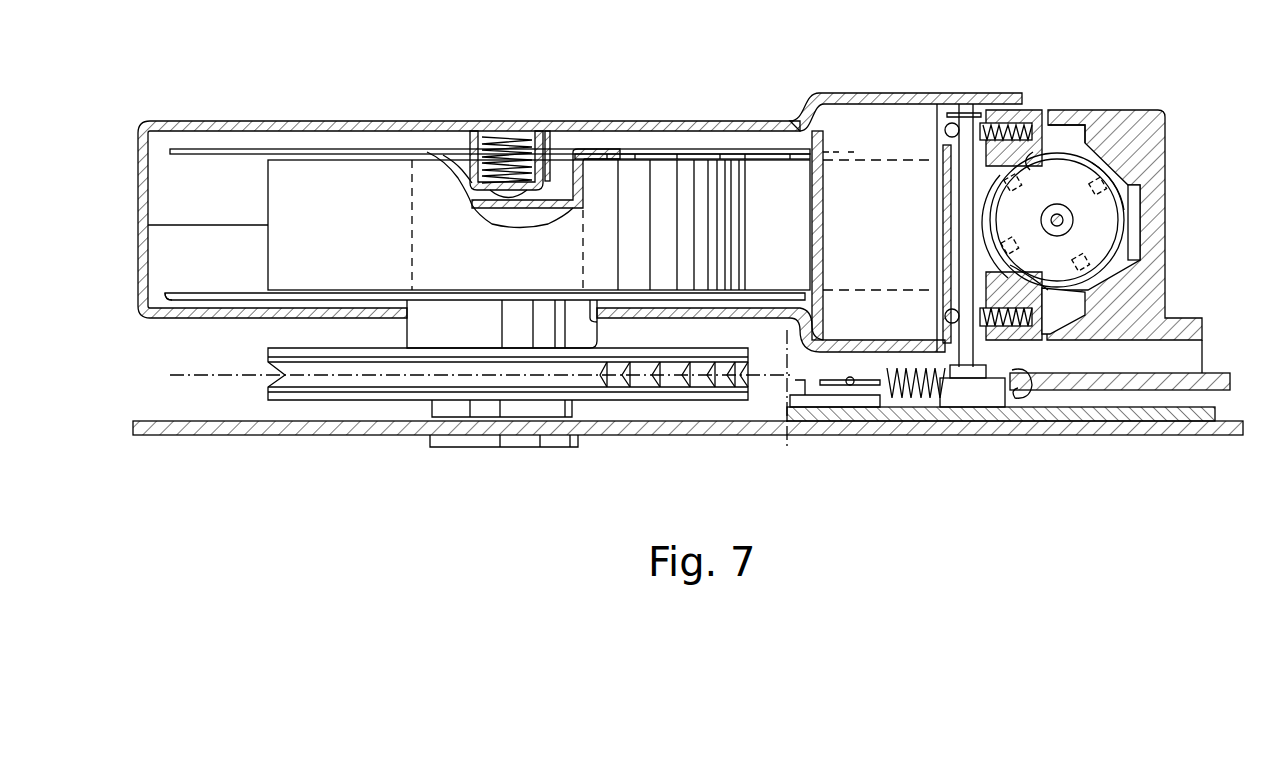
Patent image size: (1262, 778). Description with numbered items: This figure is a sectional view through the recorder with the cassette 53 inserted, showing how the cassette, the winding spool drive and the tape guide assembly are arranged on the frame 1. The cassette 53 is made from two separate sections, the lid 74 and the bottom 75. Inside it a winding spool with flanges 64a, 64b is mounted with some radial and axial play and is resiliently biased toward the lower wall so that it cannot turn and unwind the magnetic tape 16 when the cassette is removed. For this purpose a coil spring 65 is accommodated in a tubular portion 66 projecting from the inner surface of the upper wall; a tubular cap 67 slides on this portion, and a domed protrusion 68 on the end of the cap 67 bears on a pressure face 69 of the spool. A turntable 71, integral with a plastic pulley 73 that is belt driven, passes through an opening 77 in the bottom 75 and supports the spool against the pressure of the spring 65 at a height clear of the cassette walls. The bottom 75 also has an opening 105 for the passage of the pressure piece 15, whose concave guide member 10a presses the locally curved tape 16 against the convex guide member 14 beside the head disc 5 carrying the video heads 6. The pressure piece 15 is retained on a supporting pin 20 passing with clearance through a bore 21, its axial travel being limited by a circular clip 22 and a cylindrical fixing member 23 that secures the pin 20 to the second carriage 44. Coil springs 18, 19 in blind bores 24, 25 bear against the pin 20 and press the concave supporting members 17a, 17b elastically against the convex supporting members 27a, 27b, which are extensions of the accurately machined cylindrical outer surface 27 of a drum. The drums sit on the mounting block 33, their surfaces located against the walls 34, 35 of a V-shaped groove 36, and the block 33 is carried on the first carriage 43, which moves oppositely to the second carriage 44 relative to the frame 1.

The cassette 53 is at (238, 118).
The lid 74 is at (158, 165).
The bottom 75 is at (163, 272).
The flange 64a is at (255, 152).
The flange 64b is at (195, 300).
The magnetic tape 16 is at (772, 178).
The coil spring 65 is at (493, 172).
The tubular portion 66 is at (535, 150).
The tubular cap 67 is at (468, 168).
The domed protrusion 68 is at (487, 210).
The pressure face 69 is at (525, 207).
The turntable 71 is at (437, 335).
The opening 77 is at (595, 321).
The pulley 73 is at (330, 402).
The frame 1 is at (260, 436).
The second carriage 44 is at (1180, 418).
The first carriage 43 is at (1215, 378).
The pressure piece 15 is at (948, 210).
The concave guide member 10a is at (945, 188).
The supporting pin 20 is at (965, 264).
The bore 21 is at (952, 286).
The circular clip 22 is at (947, 112).
The cylindrical fixing member 23 is at (950, 398).
The coil spring 18 is at (1035, 340).
The opening 105 is at (857, 352).
The blind bore 25 is at (1022, 147).
The coil spring 19 is at (1000, 125).
The blind bore 24 is at (1020, 330).
The mounting block 33 is at (1145, 120).
The wall 35 is at (1142, 160).
The cylindrical outer surface 27 is at (1140, 235).
The head disc 5 is at (1082, 173).
The convex guide member 14 is at (1000, 214).
The video head 6 is at (1140, 197).
The concave supporting member 17b is at (1048, 165).
The convex supporting member 27b is at (1030, 170).
The concave supporting member 17a is at (1070, 305).
The convex supporting member 27a is at (1078, 300).
The wall 34 is at (1087, 293).
The V-shaped groove 36 is at (1100, 302).